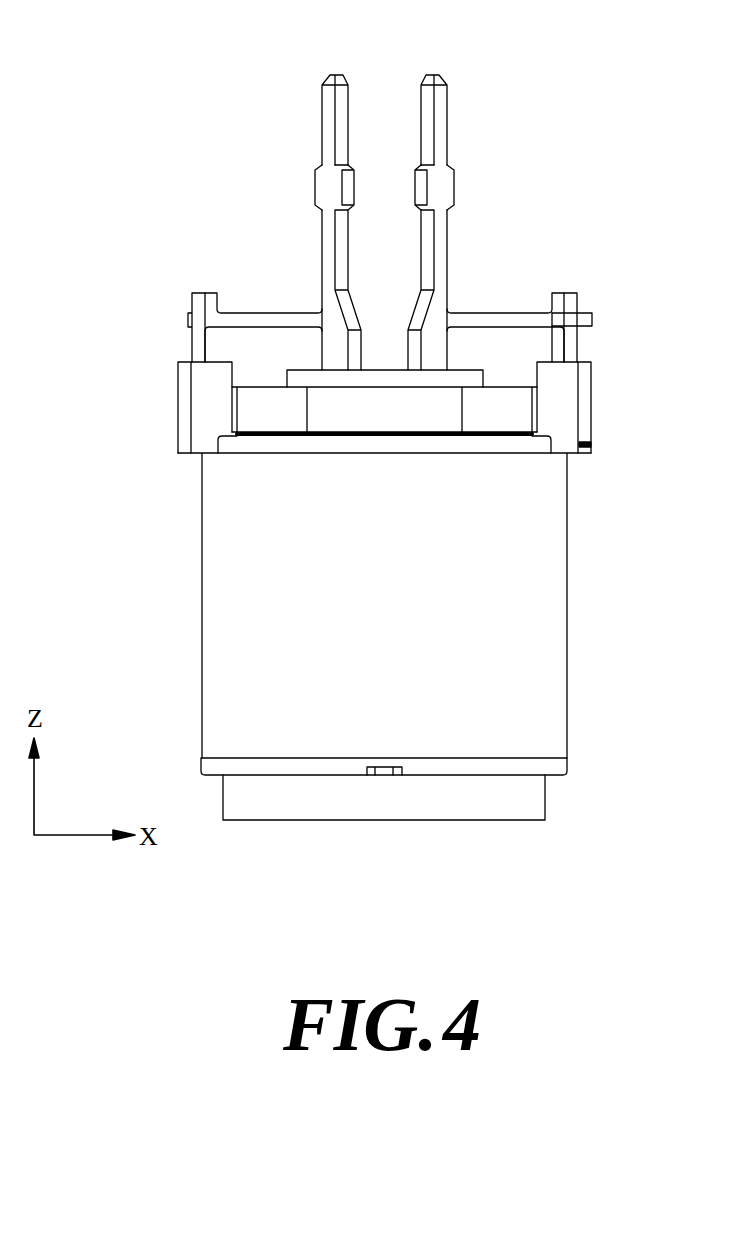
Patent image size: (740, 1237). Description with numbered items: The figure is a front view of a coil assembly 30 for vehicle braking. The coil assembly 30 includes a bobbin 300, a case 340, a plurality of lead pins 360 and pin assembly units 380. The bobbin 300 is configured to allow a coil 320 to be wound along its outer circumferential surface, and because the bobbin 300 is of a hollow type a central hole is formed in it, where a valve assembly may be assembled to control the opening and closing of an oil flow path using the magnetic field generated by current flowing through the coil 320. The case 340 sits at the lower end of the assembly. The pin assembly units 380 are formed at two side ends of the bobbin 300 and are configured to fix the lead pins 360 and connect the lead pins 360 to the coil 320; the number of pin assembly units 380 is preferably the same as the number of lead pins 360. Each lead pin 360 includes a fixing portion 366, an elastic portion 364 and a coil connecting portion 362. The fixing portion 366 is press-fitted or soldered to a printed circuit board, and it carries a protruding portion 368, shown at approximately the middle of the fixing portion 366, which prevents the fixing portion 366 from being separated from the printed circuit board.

The coil assembly 30 is at (110, 53).
The bobbin 300 is at (566, 765).
The coil 320 is at (207, 638).
The case 340 is at (546, 800).
The lead pin 360 is at (384, 222).
The coil connecting portion 362 is at (197, 295).
The elastic portion 364 is at (272, 315).
The fixing portion 366 is at (328, 238).
The protruding portion 368 is at (318, 193).
The pin assembly unit 380 is at (185, 420).